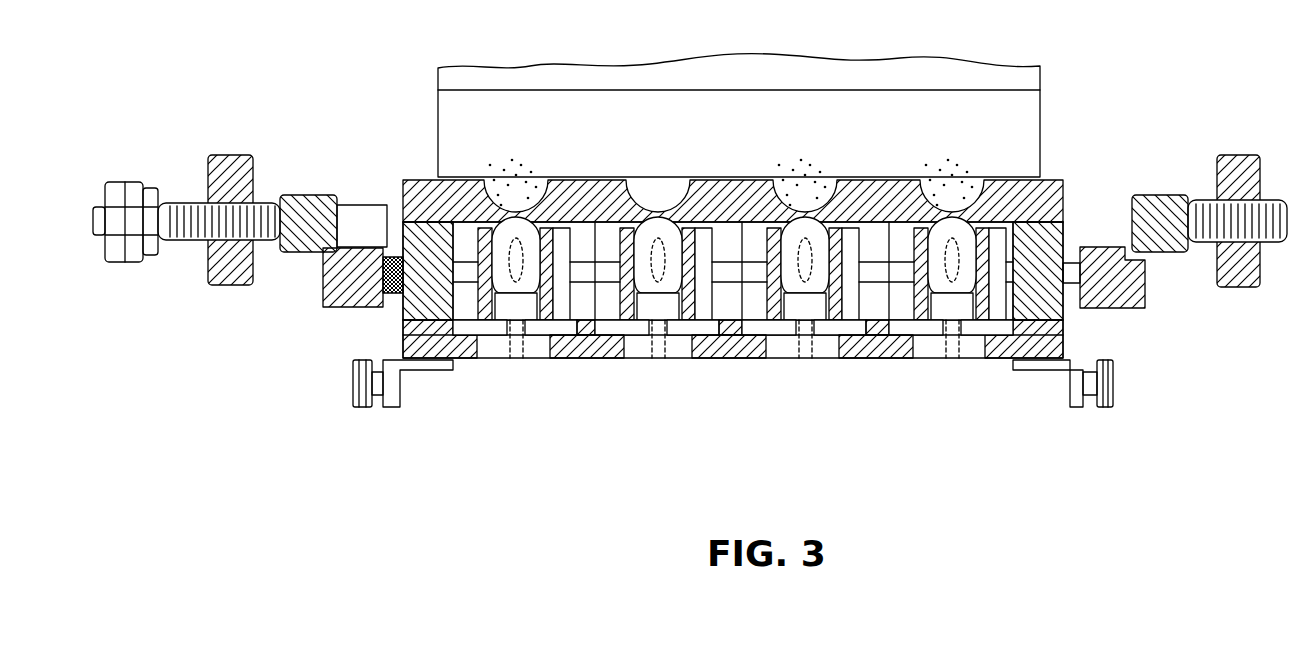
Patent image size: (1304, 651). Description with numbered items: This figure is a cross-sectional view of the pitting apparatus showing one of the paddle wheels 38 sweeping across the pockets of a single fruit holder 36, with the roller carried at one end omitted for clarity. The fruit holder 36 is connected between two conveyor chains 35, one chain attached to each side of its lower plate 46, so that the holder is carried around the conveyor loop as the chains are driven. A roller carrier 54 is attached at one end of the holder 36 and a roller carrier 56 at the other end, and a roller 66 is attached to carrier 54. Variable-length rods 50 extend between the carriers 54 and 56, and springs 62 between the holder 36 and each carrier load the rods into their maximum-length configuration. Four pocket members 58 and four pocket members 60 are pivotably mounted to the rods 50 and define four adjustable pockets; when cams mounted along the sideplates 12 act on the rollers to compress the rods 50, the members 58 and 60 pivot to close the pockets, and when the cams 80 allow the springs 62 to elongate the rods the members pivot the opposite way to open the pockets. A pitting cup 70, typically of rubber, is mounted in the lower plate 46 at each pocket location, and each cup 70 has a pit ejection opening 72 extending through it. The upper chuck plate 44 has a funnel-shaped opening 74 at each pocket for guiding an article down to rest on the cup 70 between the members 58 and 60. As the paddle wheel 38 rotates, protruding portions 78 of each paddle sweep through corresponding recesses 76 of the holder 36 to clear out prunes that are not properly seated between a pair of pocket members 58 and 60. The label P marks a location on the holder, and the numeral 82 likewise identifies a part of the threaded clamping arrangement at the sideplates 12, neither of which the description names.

The sideplate 12 is at (208, 163).
The conveyor chain 35 is at (365, 407).
The fruit holder 36 is at (1070, 190).
The paddle wheel 38 is at (438, 130).
The top chuck plate 44 is at (1053, 182).
The lower plate 46 is at (593, 362).
The variable-length rod 50 is at (903, 277).
The roller carrier 54 is at (330, 307).
The roller carrier 56 is at (1102, 307).
The pocket member 58 is at (640, 215).
The pocket member 60 is at (693, 213).
The spring 62 is at (397, 300).
The roller 66 is at (363, 210).
The pitting cup 70 is at (683, 360).
The pit ejection opening 72 is at (512, 363).
The funnel-shaped opening 74 is at (993, 177).
The recess 76 is at (834, 193).
The protruding portion 78 is at (517, 183).
The cam 80 is at (300, 192).
The threaded rod 82 is at (180, 240).
The piston P is at (652, 300).